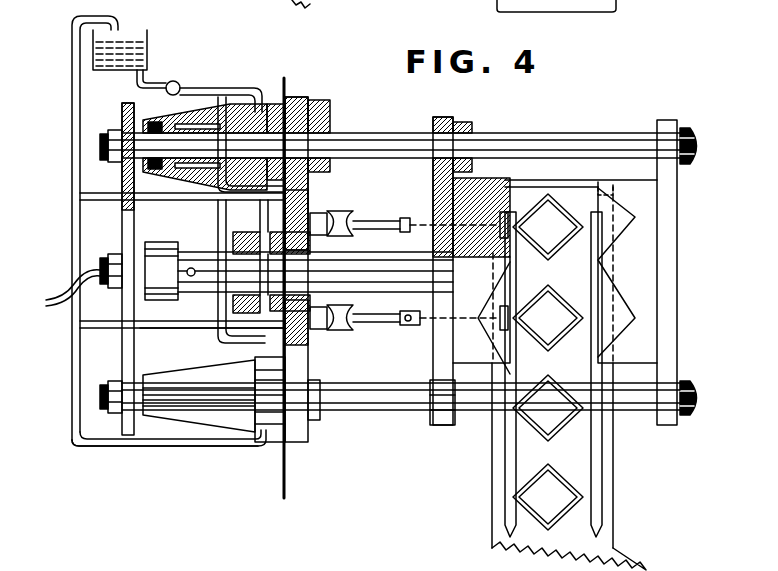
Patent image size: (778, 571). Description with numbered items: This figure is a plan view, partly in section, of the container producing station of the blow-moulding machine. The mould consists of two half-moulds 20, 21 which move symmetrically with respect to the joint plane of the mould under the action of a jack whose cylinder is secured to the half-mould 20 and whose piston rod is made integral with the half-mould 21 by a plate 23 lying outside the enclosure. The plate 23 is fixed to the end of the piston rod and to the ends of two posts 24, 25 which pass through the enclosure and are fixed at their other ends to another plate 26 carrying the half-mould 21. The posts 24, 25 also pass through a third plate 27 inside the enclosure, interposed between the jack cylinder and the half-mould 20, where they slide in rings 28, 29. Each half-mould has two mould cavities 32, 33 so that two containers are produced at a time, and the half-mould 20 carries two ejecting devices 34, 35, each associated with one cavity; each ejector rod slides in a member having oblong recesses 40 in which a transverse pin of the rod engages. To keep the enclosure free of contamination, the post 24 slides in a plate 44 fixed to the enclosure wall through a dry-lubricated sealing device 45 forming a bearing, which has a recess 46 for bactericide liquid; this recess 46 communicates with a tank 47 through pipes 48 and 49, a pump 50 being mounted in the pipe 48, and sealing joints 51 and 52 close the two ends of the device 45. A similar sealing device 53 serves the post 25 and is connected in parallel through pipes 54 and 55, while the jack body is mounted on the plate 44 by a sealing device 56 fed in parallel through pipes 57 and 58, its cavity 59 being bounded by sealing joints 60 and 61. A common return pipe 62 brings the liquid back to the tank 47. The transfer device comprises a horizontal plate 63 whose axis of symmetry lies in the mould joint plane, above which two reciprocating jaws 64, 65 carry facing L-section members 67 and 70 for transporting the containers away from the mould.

The half-mould 20 is at (471, 271).
The half-mould 21 is at (628, 272).
The plate 23 is at (126, 250).
The post 24 is at (392, 140).
The post 25 is at (366, 412).
The plate 26 is at (664, 132).
The third plate 27 is at (437, 172).
The ring 28 is at (470, 126).
The ring 29 is at (446, 422).
The mould cavity 32 is at (635, 220).
The mould cavity 33 is at (632, 314).
The ejecting device 34 is at (382, 219).
The ejecting device 35 is at (384, 326).
The oblong recess 40 is at (410, 326).
The plate 44 is at (316, 108).
The sealing device 45 is at (248, 122).
The recess 46 is at (294, 118).
The tank 47 is at (122, 50).
The pipe 48 is at (222, 115).
The pipe 49 is at (168, 200).
The pump 50 is at (173, 81).
The sealing joint 51 is at (150, 166).
The sealing joint 52 is at (312, 128).
The sealing device 53 is at (228, 390).
The pipe 54 is at (222, 340).
The pipe 55 is at (190, 446).
The sealing device 56 is at (304, 332).
The pipe 57 is at (233, 236).
The pipe 58 is at (165, 328).
The cavity 59 is at (302, 200).
The sealing joint 60 is at (220, 288).
The sealing joint 61 is at (296, 256).
The common return pipe 62 is at (72, 106).
The horizontal plate 63 is at (572, 452).
The jaw 64 is at (588, 470).
The jaw 65 is at (492, 476).
The L-section member 67 is at (588, 512).
The L-section member 70 is at (492, 512).